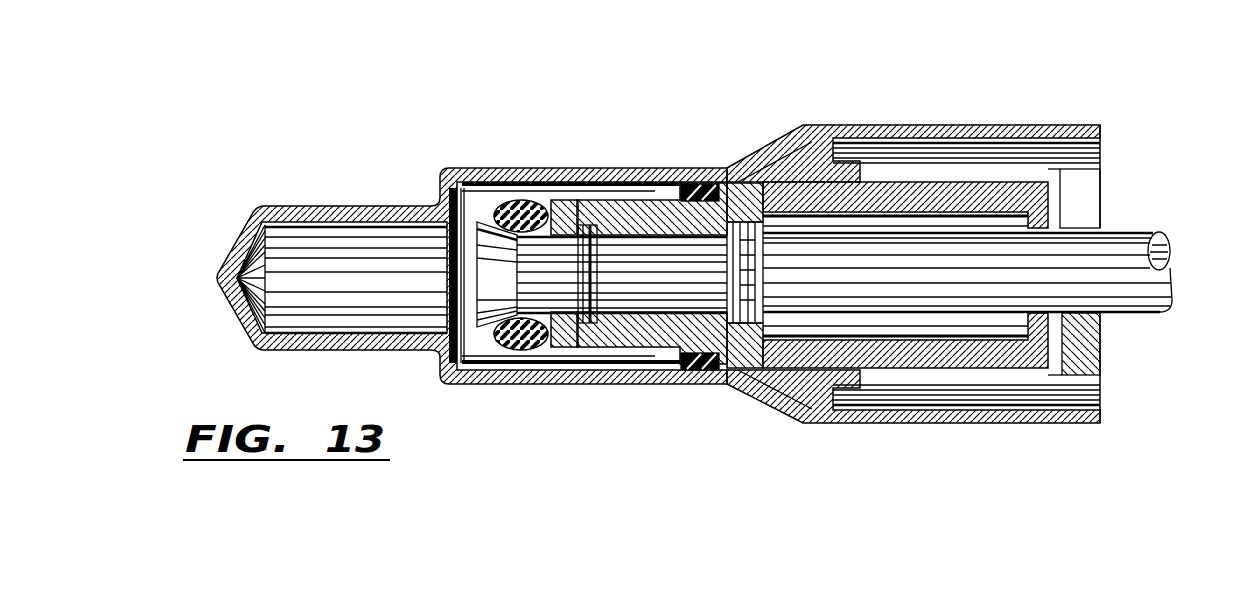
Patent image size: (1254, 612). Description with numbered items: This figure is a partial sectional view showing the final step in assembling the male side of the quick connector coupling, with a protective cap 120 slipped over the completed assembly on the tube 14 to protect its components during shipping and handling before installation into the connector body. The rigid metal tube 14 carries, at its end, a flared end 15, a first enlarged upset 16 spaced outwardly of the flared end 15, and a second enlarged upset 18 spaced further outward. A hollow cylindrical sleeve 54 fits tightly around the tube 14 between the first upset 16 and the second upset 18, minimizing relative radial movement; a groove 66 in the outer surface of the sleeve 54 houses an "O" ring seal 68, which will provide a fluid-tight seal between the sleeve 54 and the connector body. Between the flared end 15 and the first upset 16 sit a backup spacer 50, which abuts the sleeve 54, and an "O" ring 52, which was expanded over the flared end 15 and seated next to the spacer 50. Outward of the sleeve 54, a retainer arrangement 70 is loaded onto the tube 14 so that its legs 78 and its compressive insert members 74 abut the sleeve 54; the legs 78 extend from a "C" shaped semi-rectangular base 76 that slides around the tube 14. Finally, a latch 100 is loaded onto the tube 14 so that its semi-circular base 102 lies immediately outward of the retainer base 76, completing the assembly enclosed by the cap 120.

The tube 14 is at (1125, 292).
The flared end 15 is at (487, 253).
The first enlarged upset 16 is at (583, 265).
The second enlarged upset 18 is at (755, 275).
The backup spacer 50 is at (562, 350).
The "O" ring 52 is at (505, 200).
The sleeve 54 is at (622, 200).
The groove 66 is at (694, 184).
The "O" ring seal 68 is at (697, 385).
The retainer arrangement 70 is at (1002, 382).
The compressive insert members 74 is at (805, 124).
The base 76 is at (1043, 205).
The legs 78 is at (932, 187).
The latch 100 is at (1110, 406).
The base 102 is at (1080, 362).
The protective cap 120 is at (337, 204).